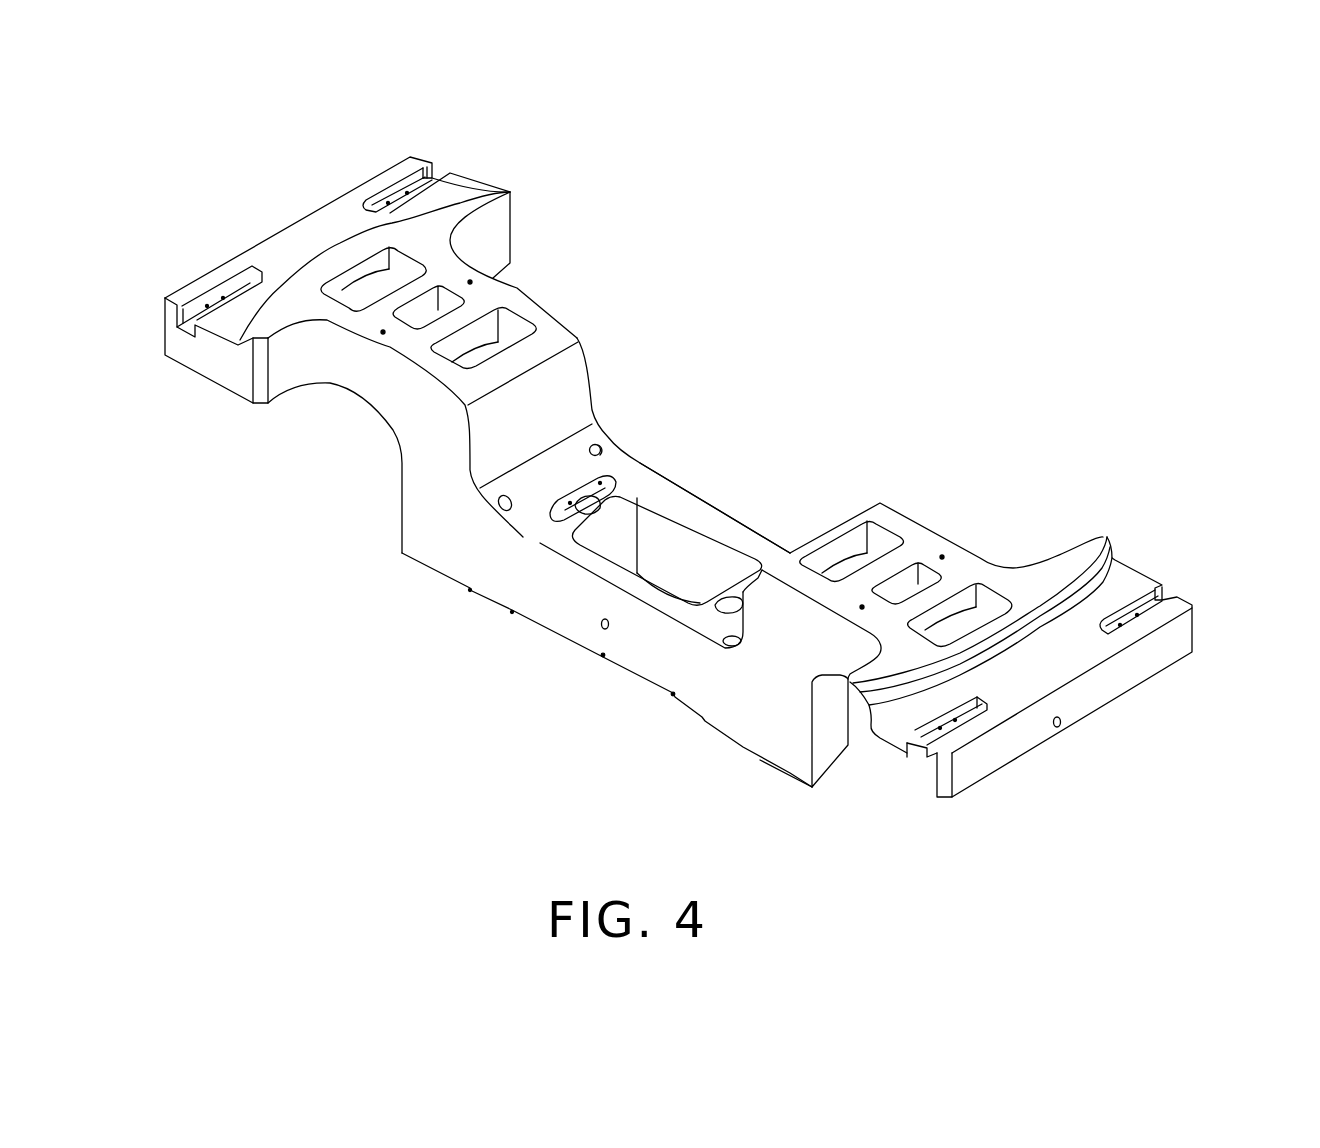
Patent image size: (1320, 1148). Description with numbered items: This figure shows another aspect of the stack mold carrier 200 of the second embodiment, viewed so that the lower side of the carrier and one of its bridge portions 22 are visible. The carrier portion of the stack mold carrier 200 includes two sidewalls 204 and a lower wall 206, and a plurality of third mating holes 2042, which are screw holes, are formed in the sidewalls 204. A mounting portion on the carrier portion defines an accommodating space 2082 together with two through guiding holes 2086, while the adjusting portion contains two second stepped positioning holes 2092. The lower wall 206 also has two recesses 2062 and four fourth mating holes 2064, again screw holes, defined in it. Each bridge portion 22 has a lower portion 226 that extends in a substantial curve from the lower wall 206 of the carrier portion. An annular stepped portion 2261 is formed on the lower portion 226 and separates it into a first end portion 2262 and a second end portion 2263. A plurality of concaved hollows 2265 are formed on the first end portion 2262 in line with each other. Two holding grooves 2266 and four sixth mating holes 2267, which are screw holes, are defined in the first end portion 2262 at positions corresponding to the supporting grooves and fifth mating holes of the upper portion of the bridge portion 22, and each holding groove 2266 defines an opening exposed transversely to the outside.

The stack mold carrier 200 is at (735, 81).
The bridge portion 22 is at (1163, 687).
The sidewall 204 is at (775, 738).
The third mating holes 2042 is at (603, 653).
The lower wall 206 is at (667, 492).
The recess 2062 is at (660, 493).
The fourth mating holes 2064 is at (600, 492).
The accommodating space 2082 is at (705, 557).
The through guiding holes 2086 is at (600, 495).
The second stepped positioning holes 2092 is at (600, 445).
The lower portion 226 is at (1125, 583).
The annular stepped portion 2261 is at (1130, 483).
The first end portion 2262 is at (1013, 587).
The second end portion 2263 is at (1085, 653).
The concaved hollows 2265 is at (385, 266).
The holding grooves 2266 is at (920, 758).
The sixth mating holes 2267 is at (937, 730).